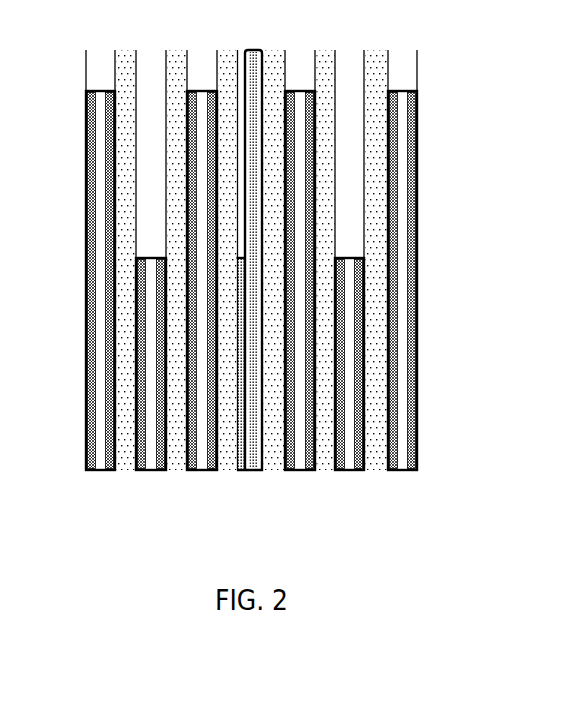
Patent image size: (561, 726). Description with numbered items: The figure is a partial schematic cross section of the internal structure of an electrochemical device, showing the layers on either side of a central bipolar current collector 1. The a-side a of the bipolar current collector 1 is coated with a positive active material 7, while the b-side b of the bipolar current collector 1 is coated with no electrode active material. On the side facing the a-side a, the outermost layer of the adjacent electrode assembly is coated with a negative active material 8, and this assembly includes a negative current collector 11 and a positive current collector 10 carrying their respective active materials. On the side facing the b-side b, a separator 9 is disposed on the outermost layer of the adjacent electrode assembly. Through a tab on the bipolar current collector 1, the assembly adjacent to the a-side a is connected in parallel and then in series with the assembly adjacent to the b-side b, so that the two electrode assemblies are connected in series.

The bipolar current collector 1 is at (249, 277).
The positive active material 7 is at (162, 471).
The negative active material 8 is at (309, 471).
The separator 9 is at (126, 471).
The positive current collector 10 is at (357, 471).
The negative current collector 11 is at (201, 471).
The a-side of the bipolar current collector a is at (246, 73).
The b-side of the bipolar current collector b is at (263, 70).